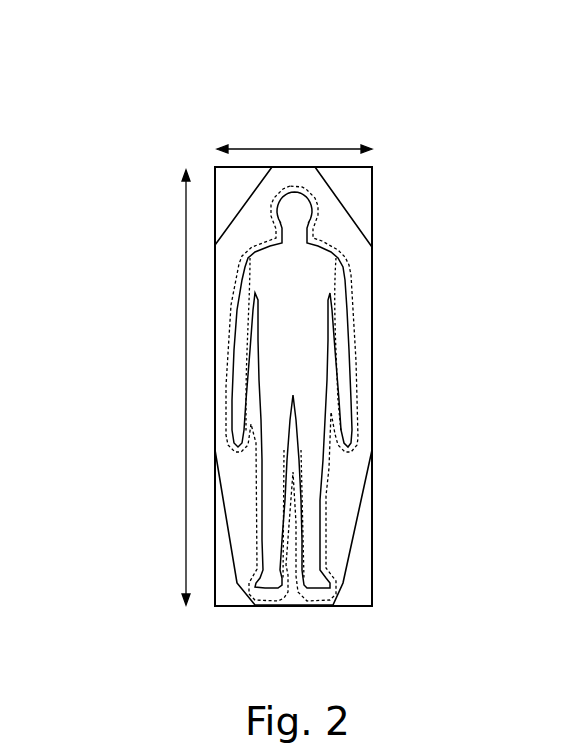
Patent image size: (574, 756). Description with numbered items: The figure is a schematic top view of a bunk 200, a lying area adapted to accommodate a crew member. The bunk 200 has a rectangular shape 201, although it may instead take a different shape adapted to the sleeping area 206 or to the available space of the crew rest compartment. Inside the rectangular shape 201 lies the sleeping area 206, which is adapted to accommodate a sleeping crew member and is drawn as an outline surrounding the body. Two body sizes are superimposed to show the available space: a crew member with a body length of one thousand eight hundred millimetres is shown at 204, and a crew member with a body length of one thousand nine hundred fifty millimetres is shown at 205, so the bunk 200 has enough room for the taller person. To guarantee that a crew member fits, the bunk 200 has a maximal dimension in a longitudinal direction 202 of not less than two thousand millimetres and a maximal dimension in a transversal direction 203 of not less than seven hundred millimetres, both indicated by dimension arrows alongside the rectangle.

The bunk 200 is at (420, 83).
The rectangular shape 201 is at (372, 186).
The longitudinal direction 202 is at (185, 383).
The transversal direction 203 is at (292, 147).
The crew member with a body length of 1800 mm 204 is at (343, 355).
The crew member with a body length of 1950 mm 205 is at (353, 278).
The sleeping area 206 is at (347, 207).